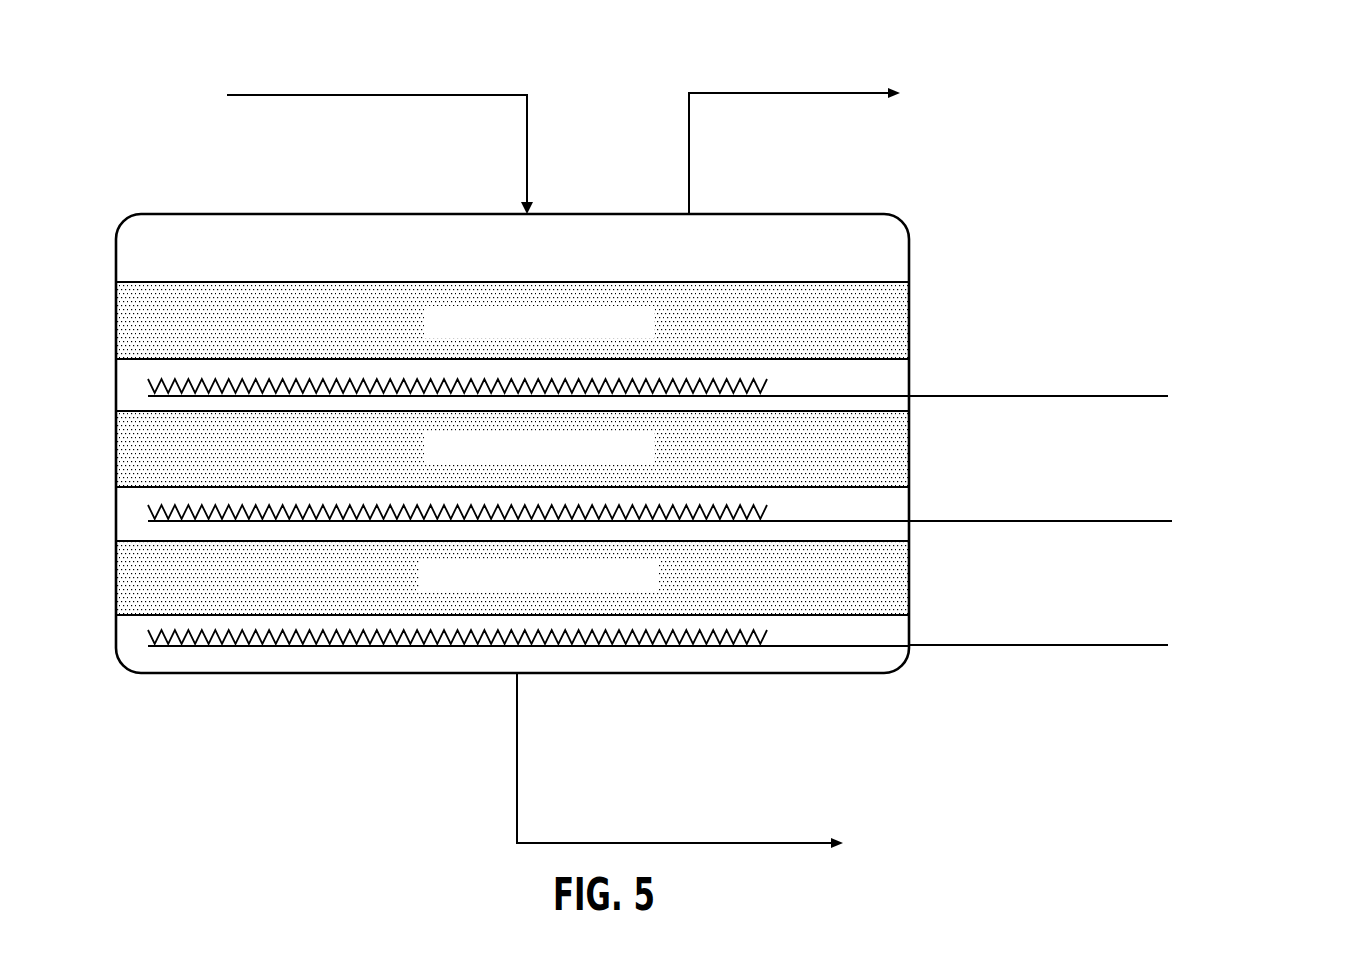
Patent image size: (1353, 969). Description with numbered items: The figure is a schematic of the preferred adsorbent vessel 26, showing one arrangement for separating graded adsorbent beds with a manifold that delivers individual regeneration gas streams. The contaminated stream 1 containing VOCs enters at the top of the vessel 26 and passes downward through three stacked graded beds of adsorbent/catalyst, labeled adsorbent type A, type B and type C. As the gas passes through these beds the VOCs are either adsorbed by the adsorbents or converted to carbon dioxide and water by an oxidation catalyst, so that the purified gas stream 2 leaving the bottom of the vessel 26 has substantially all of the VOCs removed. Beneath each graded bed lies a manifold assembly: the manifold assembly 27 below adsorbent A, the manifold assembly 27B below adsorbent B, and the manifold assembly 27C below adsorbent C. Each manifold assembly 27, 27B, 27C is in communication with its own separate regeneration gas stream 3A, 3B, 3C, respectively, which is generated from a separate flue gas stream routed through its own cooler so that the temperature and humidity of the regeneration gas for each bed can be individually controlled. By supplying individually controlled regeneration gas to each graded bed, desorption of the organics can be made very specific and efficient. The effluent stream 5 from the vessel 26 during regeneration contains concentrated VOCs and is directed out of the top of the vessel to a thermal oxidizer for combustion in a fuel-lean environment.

The contaminated stream 1 is at (351, 137).
The purified gas stream 2 is at (797, 767).
The effluent stream 5 is at (913, 138).
The adsorbent vessel 26 is at (535, 443).
The manifold assembly 27 is at (528, 379).
The manifold assembly 27B is at (528, 504).
The manifold assembly 27C is at (528, 629).
The regeneration gas stream 3A is at (1119, 398).
The regeneration gas stream 3B is at (1117, 523).
The regeneration gas stream 3C is at (1113, 647).